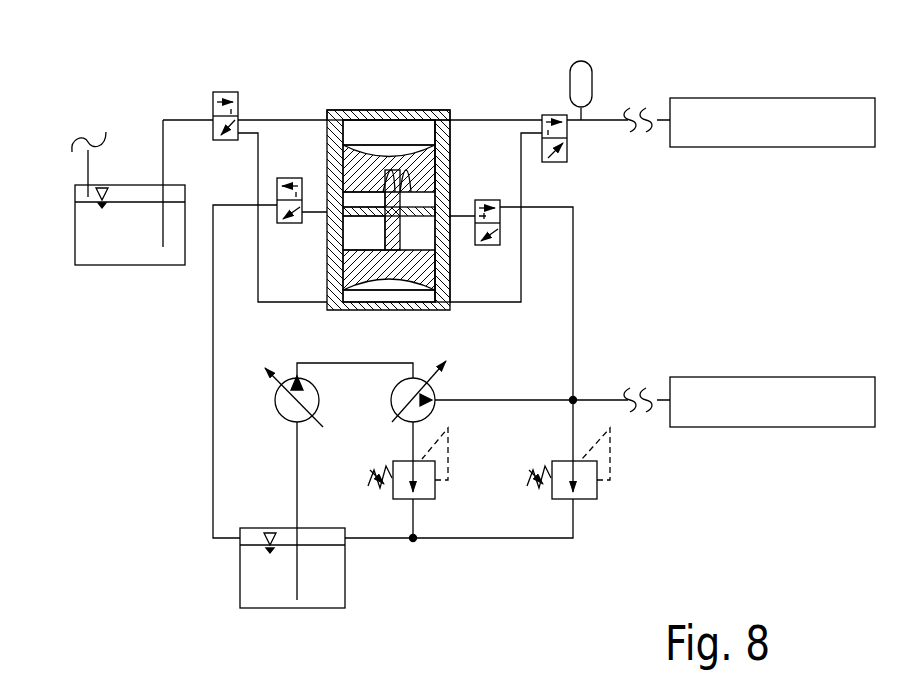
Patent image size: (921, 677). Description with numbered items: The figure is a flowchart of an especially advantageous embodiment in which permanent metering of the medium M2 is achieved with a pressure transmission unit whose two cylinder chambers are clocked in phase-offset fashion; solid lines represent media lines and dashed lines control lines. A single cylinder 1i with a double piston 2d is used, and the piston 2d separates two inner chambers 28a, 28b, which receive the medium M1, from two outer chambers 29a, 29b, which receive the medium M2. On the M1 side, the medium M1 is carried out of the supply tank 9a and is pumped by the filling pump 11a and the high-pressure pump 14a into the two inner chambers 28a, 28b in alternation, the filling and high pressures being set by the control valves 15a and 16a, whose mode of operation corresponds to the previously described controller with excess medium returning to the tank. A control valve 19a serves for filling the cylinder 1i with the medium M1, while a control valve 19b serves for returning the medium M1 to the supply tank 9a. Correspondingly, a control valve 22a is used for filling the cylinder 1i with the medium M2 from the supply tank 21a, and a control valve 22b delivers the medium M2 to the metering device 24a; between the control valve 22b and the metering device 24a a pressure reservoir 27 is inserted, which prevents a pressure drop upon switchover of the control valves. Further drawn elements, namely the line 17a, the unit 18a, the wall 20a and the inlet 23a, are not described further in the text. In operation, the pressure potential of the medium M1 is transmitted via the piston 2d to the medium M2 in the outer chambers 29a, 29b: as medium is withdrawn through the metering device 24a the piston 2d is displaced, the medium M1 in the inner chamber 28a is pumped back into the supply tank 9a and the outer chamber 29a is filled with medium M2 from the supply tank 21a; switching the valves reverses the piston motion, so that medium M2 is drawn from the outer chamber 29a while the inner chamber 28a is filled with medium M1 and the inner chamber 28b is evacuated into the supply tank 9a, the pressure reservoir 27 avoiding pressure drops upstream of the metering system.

The double piston 2d is at (327, 147).
The cylinder 1i is at (452, 140).
The cylinder housing wall 20a is at (385, 108).
The outer chamber 29b is at (363, 134).
The outer chamber 29a is at (377, 301).
The inner chamber 28b is at (365, 203).
The inner chamber 28a is at (367, 233).
The medium M1 is at (420, 203).
The medium M2 is at (413, 134).
The control valve 22a is at (227, 92).
The control valve 22b is at (567, 157).
The control valve 19a is at (500, 240).
The control valve 19b is at (277, 192).
The pressure reservoir 27 is at (592, 72).
The metering device 24a is at (772, 137).
The consumer / load unit 18a is at (772, 416).
The pressure line 17a is at (572, 399).
The supply tank 21a is at (103, 265).
The supply line 23a is at (85, 147).
The supply tank 9a is at (285, 608).
The variable displacement pump 11a is at (279, 421).
The variable displacement pump 14a is at (446, 418).
The pressure relief valve 15a is at (435, 495).
The pressure relief valve 16a is at (597, 495).